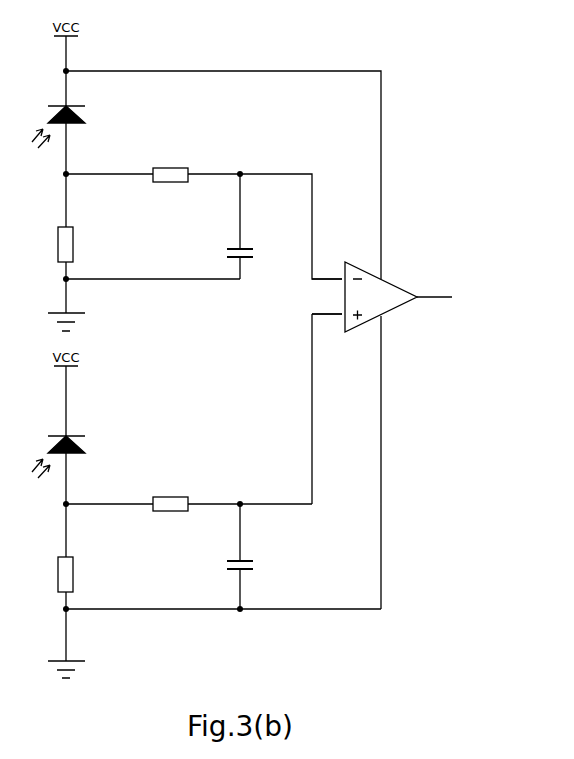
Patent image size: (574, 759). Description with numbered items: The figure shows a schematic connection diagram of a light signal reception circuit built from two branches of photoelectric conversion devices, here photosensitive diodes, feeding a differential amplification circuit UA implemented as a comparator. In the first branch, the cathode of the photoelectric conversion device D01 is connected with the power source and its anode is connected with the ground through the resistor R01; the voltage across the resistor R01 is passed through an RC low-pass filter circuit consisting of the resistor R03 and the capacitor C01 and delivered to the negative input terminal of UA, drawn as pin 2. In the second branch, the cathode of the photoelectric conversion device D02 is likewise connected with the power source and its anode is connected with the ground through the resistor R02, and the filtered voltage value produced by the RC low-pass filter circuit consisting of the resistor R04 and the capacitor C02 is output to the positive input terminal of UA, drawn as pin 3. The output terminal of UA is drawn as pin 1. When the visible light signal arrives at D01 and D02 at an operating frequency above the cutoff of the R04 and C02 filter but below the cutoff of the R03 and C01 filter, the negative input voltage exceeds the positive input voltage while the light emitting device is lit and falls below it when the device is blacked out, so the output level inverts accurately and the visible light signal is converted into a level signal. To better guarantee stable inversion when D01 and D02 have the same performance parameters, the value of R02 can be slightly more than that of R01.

The photoelectric conversion device D01 is at (72, 127).
The photoelectric conversion device D02 is at (72, 457).
The resistor R01 is at (84, 244).
The resistor R02 is at (84, 574).
The resistor R03 is at (170, 167).
The resistor R04 is at (170, 496).
The capacitor C01 is at (257, 256).
The capacitor C02 is at (257, 569).
The differential amplification circuit UA is at (388, 297).
The amplifier output pin 1 is at (434, 289).
The amplifier inverting input pin 2 is at (327, 271).
The amplifier non-inverting input pin 3 is at (327, 306).